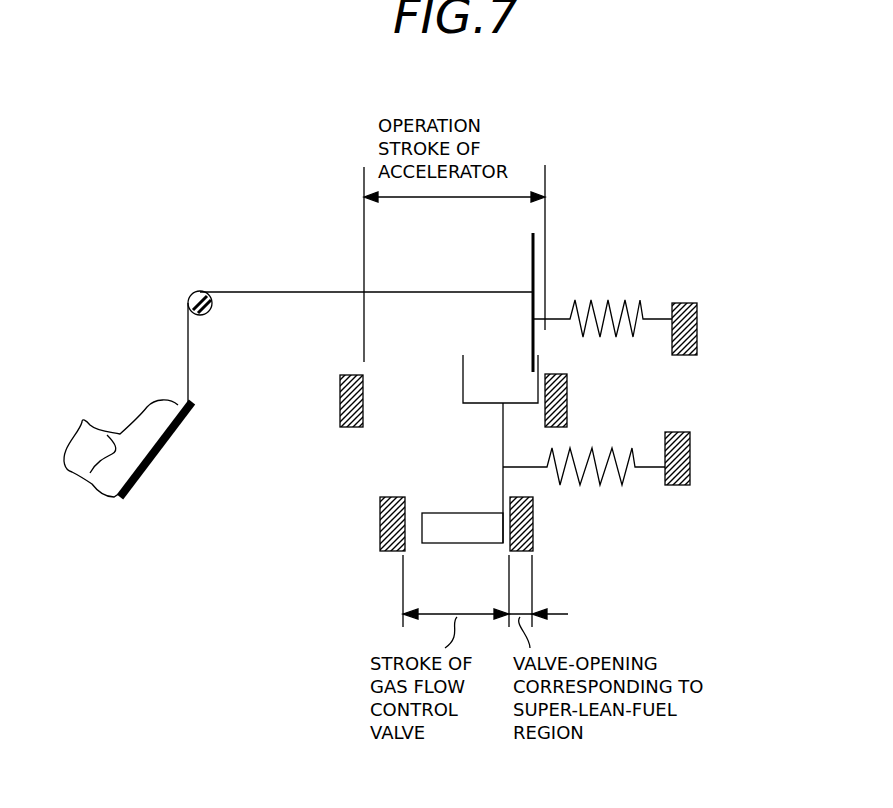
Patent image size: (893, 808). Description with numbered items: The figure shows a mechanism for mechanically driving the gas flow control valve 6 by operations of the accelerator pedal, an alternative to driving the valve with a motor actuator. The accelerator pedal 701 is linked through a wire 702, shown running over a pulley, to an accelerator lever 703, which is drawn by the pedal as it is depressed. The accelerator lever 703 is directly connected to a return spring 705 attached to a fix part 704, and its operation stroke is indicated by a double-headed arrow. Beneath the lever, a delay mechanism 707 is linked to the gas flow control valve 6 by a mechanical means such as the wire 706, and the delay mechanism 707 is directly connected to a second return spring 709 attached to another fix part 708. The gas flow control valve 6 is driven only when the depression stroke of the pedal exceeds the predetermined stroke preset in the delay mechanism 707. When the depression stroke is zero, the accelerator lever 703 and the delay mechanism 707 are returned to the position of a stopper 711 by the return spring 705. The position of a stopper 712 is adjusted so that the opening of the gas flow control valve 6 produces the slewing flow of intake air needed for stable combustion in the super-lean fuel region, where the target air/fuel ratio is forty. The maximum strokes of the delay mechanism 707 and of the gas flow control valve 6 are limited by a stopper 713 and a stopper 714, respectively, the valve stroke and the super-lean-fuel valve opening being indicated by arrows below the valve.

The gas flow control valve 6 is at (452, 544).
The accelerator pedal 701 is at (163, 452).
The wire 702 is at (288, 292).
The accelerator lever 703 is at (534, 273).
The fix part 704 is at (697, 322).
The return spring 705 is at (640, 310).
The wire 706 is at (500, 435).
The delay mechanism 707 is at (467, 386).
The fix part 708 is at (690, 478).
The return spring 709 is at (632, 453).
The stopper 711 is at (567, 395).
The stopper 712 is at (533, 522).
The stopper 713 is at (363, 400).
The stopper 714 is at (379, 520).